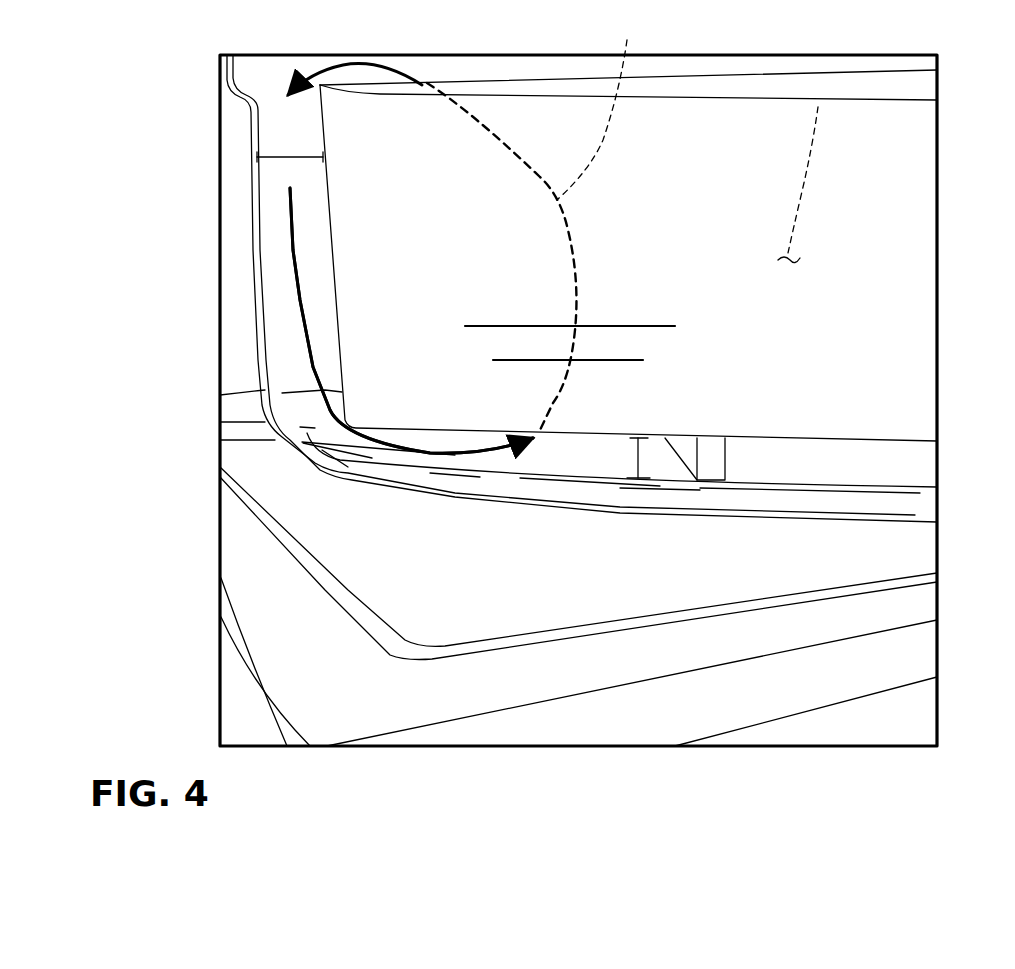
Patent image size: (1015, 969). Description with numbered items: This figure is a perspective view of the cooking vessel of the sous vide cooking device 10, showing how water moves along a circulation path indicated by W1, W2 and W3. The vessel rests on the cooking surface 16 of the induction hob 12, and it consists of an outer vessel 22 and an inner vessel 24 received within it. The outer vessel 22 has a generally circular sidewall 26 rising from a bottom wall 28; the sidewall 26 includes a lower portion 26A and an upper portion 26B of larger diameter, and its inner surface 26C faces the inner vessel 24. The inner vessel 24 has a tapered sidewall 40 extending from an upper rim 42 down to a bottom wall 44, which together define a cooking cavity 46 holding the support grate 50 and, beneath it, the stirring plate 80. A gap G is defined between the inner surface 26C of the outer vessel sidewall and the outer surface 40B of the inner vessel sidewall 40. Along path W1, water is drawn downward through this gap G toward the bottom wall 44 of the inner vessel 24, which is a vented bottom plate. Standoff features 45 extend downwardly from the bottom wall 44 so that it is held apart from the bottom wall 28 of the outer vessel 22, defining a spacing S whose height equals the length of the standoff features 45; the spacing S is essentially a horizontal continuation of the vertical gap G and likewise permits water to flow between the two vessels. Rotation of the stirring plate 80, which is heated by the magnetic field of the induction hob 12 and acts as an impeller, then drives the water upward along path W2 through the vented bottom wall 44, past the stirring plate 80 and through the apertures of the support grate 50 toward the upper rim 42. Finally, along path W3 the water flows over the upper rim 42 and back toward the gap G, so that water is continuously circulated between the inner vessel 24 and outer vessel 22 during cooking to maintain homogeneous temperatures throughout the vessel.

The sous vide cooking device 10 is at (203, 200).
The induction hob 12 is at (908, 713).
The cooking surface 16 is at (392, 565).
The outer vessel 22 is at (237, 168).
The inner vessel 24 is at (340, 375).
The sidewall 26 is at (333, 382).
The lower portion 26A is at (263, 392).
The upper portion 26B is at (228, 82).
The inner surface 26C is at (264, 325).
The bottom wall 28 is at (708, 520).
The sidewall 40 is at (268, 400).
The outer surface 40B is at (333, 242).
The upper rim 42 is at (503, 70).
The bottom wall 44 is at (600, 436).
The standoff features 45 is at (727, 462).
The cooking cavity 46 is at (820, 100).
The support grate 50 is at (652, 325).
The stirring plate 80 is at (633, 360).
The gap G is at (285, 157).
The spacing S is at (638, 455).
The water circulation path portion W1 is at (297, 288).
The water circulation path portion W2 is at (536, 224).
The water circulation path portion W3 is at (340, 67).